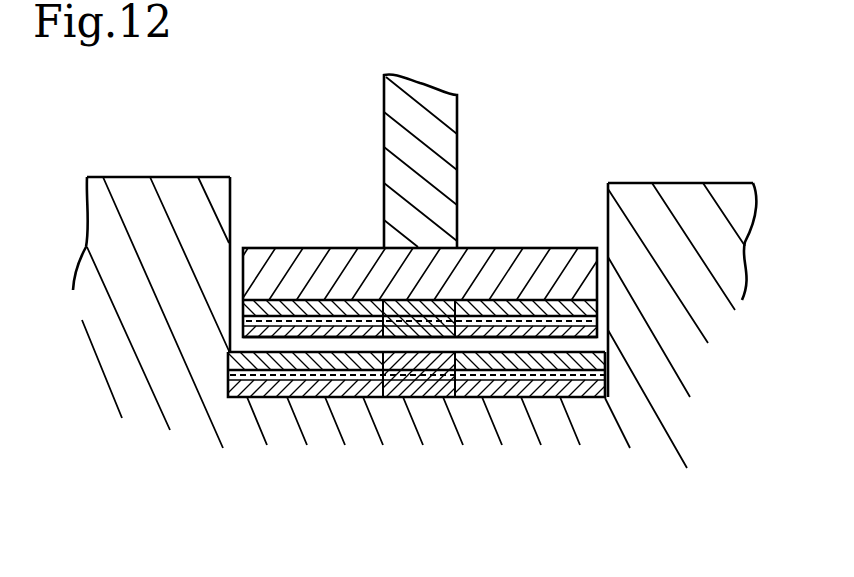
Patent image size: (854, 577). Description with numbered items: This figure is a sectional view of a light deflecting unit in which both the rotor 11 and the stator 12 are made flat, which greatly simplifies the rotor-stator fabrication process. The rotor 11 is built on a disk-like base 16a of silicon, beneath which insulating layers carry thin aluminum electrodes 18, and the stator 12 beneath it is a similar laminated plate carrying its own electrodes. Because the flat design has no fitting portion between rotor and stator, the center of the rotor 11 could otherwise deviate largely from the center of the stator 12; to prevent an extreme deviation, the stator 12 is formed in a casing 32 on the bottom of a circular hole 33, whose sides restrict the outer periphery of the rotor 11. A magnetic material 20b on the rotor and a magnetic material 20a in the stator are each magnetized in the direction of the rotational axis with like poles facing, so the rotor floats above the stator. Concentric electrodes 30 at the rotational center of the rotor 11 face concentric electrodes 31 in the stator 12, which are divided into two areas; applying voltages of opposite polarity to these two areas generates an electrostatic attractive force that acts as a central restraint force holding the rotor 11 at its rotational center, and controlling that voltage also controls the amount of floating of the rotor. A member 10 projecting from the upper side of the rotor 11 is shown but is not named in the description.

The probe member 10 is at (445, 140).
The rotor 11 is at (563, 239).
The stator 12 is at (586, 345).
The disk-like base 16a is at (508, 248).
The aluminum electrodes 18 is at (567, 398).
The magnetic material 20a is at (372, 398).
The magnetic material 20b is at (408, 398).
The concentric electrodes 30 is at (483, 398).
The concentric electrodes 31 is at (468, 398).
The casing 32 is at (133, 207).
The circular hole 33 is at (232, 202).